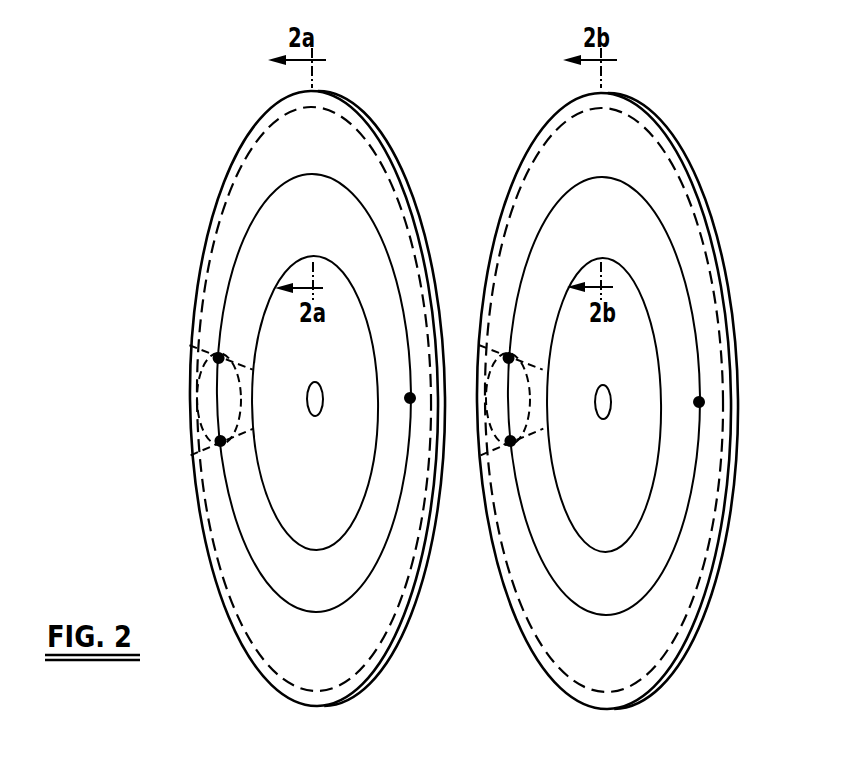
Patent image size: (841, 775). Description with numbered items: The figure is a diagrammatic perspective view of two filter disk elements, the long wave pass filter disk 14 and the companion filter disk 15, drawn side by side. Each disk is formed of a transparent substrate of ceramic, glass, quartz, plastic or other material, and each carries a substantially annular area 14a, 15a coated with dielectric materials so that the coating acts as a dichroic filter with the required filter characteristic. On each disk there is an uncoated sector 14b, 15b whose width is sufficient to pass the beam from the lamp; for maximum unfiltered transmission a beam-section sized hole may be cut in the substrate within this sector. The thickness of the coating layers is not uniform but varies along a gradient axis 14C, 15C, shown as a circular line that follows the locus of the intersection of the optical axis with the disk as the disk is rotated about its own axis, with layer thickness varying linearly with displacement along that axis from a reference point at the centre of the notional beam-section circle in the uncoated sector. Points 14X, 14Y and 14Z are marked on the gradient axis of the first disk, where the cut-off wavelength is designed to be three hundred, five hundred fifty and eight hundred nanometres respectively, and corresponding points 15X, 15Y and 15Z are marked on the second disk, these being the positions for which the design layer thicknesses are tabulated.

The long wave pass filter disk 14 is at (237, 586).
The annular area 14a is at (362, 143).
The uncoated sector 14b is at (198, 397).
The gradient axis 14C is at (378, 545).
The point 14X is at (220, 440).
The point 14Y is at (410, 399).
The point 14Z is at (219, 357).
The filter disk 15 is at (670, 612).
The annular area 15a is at (662, 157).
The uncoated sector 15b is at (522, 390).
The gradient axis 15C is at (678, 540).
The point 15X is at (510, 440).
The point 15Y is at (699, 403).
The point 15Z is at (509, 357).